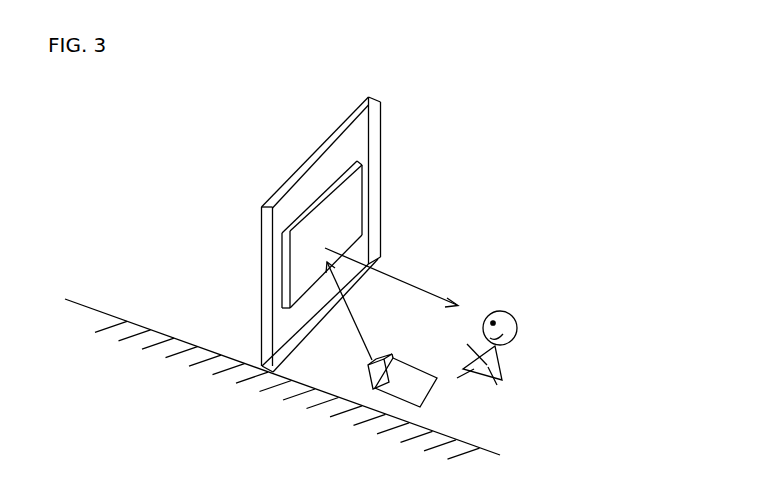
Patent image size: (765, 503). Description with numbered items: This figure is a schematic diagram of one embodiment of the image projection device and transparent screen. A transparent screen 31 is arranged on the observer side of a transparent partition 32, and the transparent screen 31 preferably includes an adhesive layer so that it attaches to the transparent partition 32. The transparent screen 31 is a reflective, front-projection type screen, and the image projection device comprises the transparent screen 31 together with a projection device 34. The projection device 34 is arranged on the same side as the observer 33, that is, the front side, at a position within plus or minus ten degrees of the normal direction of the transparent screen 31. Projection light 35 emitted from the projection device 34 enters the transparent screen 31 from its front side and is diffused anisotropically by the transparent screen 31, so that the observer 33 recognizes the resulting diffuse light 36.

The transparent screen 31 is at (353, 227).
The transparent partition 32 is at (357, 138).
The observer 33 is at (507, 358).
The projection device 34 is at (437, 388).
The projection light 35 is at (349, 311).
The diffuse light 36 is at (391, 277).